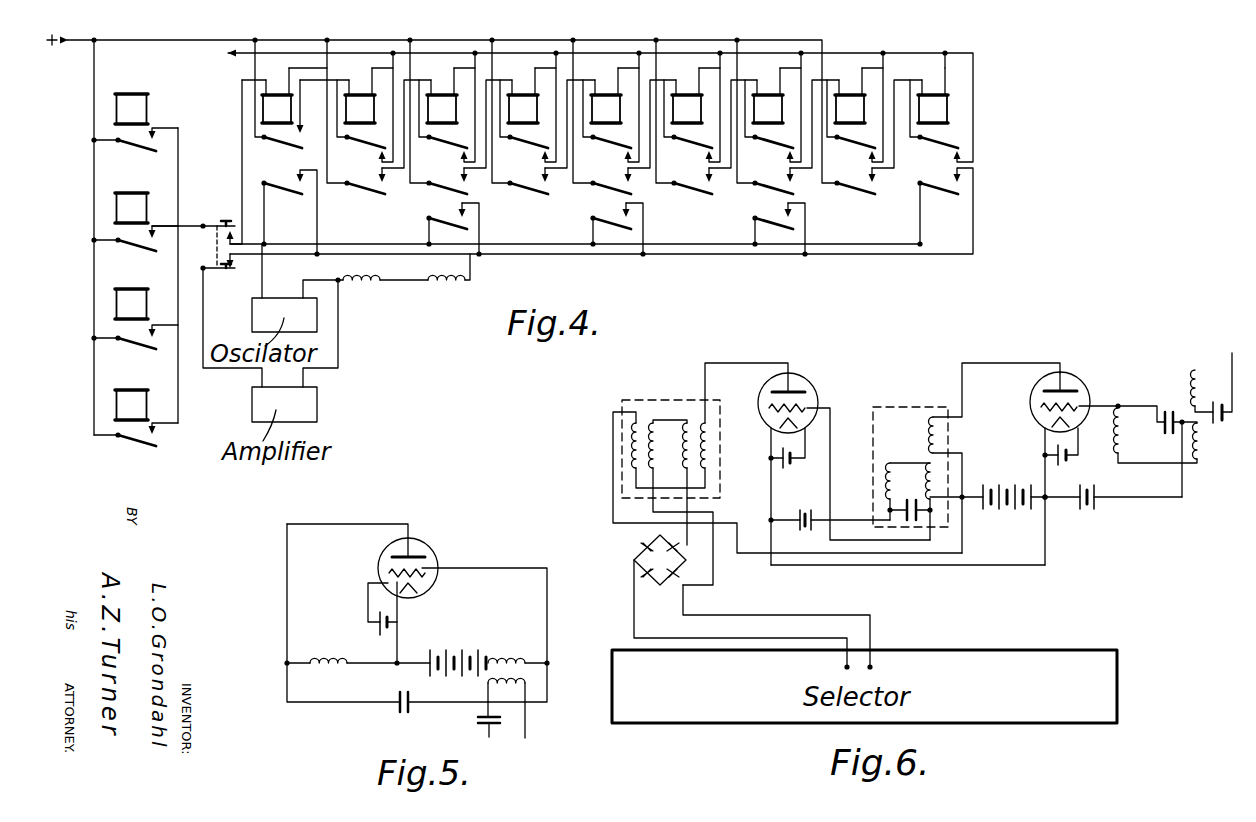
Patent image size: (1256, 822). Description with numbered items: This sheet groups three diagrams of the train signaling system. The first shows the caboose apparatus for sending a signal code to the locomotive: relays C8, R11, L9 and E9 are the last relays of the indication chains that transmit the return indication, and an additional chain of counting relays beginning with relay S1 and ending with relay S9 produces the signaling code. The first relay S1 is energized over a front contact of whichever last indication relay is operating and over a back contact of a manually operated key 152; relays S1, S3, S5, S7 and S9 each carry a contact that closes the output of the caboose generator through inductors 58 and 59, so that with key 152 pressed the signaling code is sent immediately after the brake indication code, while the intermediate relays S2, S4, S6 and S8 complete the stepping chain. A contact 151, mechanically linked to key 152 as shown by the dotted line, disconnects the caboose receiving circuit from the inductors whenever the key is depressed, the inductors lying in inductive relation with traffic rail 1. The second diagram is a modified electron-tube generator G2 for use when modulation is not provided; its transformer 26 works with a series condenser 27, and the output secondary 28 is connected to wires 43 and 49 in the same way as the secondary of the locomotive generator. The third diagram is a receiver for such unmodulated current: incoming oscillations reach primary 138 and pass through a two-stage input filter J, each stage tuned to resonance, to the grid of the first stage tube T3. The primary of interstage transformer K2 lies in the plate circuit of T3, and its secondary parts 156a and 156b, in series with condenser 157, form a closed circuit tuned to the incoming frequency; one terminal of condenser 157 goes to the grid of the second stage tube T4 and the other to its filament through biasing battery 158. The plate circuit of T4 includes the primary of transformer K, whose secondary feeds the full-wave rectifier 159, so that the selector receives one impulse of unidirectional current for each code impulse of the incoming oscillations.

In FIG. 4, the traffic rail 1 is at (241, 62).
In FIG. 4, the relay C8 is at (158, 99).
In FIG. 4, the relay R11 is at (124, 211).
In FIG. 4, the relay L9 is at (124, 306).
In FIG. 4, the relay E9 is at (124, 408).
In FIG. 4, the contact 151 is at (222, 271).
In FIG. 4, the manually operated key 152 is at (216, 224).
In FIG. 4, the inductor 58 is at (357, 287).
In FIG. 4, the inductor 59 is at (445, 287).
In FIG. 4, the relay S1 is at (278, 104).
In FIG. 4, the relay S2 is at (361, 104).
In FIG. 4, the relay S3 is at (443, 104).
In FIG. 4, the relay S4 is at (524, 104).
In FIG. 4, the relay S5 is at (607, 104).
In FIG. 4, the relay S6 is at (688, 104).
In FIG. 4, the relay S7 is at (769, 104).
In FIG. 4, the relay S8 is at (851, 104).
In FIG. 4, the relay S9 is at (934, 104).
In FIG. 5, the vacuum tube generator G2 is at (447, 560).
In FIG. 5, the transformer 26 is at (528, 672).
In FIG. 5, the condenser 27 is at (402, 711).
In FIG. 5, the secondary 28 is at (488, 691).
In FIG. 5, the wire 43 is at (487, 732).
In FIG. 5, the wire 49 is at (526, 722).
In FIG. 6, the transformer K is at (688, 400).
In FIG. 6, the interstage transformer K2 is at (912, 407).
In FIG. 6, the second stage tube T4 is at (808, 392).
In FIG. 6, the first stage tube T3 is at (1082, 384).
In FIG. 6, the two stage input filter J is at (1156, 436).
In FIG. 6, the primary 138 is at (1196, 369).
In FIG. 6, the secondary part 156a is at (928, 445).
In FIG. 6, the secondary part 156b is at (940, 478).
In FIG. 6, the condenser 157 is at (920, 515).
In FIG. 6, the biasing battery 158 is at (799, 512).
In FIG. 6, the full-wave rectifier 159 is at (642, 555).